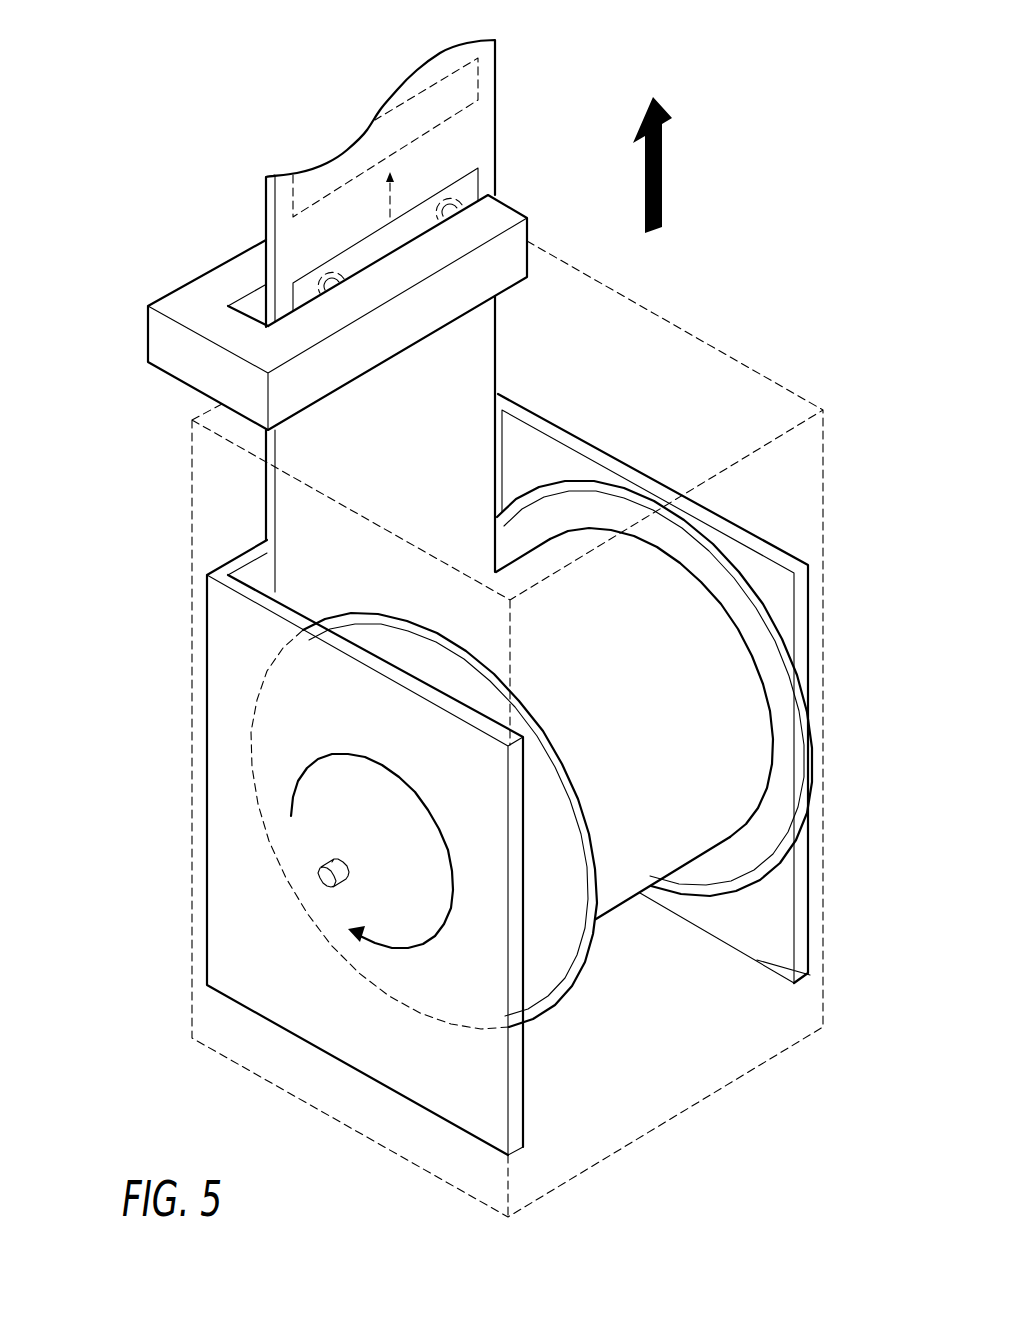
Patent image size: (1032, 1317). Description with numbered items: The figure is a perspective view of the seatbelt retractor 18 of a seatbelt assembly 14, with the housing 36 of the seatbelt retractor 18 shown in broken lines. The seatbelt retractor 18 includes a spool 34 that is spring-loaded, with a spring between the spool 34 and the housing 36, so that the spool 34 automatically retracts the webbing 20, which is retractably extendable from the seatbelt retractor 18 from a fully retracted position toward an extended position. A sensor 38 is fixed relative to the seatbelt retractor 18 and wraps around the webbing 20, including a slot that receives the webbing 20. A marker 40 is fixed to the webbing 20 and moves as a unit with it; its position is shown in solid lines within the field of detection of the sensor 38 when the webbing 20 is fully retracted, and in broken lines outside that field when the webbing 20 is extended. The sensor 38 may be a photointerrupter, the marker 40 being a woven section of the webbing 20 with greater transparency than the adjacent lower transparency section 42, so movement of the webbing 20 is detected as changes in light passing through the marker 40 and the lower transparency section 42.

The seatbelt assembly 14 is at (745, 219).
The seatbelt retractor 18 is at (150, 866).
The webbing 20 is at (420, 302).
The spool 34 is at (587, 970).
The housing 36 is at (823, 490).
The sensor 38 is at (282, 312).
The marker 40 is at (487, 92).
The lower transparency section 42 is at (303, 240).